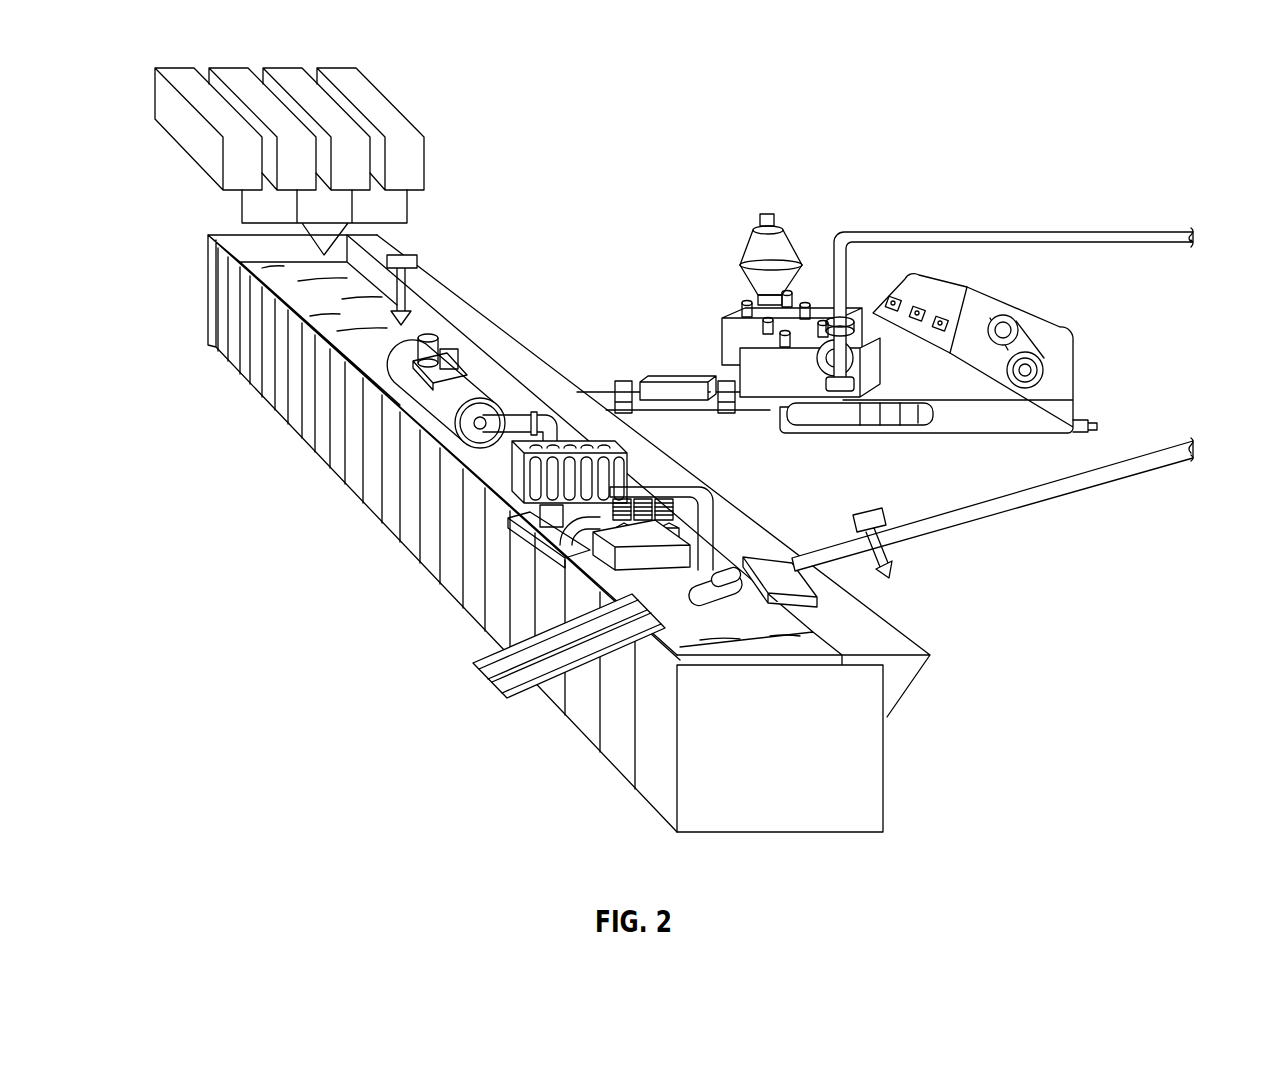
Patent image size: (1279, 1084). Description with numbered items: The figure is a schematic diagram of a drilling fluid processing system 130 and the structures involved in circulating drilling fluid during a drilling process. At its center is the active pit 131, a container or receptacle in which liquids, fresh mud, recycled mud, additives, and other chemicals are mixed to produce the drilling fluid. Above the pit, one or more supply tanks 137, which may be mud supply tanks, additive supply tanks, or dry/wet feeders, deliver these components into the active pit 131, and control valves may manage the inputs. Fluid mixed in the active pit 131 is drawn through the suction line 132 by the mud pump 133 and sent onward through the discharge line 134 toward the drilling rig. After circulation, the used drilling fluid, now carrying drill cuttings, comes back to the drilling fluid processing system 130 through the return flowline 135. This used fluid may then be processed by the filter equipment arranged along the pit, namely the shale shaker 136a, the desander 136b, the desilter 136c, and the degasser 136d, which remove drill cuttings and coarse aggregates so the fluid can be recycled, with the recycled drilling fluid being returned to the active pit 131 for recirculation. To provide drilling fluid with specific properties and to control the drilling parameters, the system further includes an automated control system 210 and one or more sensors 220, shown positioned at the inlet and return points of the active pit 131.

The drilling fluid processing system 130 is at (667, 446).
The active pit 131 is at (293, 298).
The suction line 132 is at (606, 362).
The mud pump 133 is at (873, 434).
The discharge line 134 is at (930, 231).
The return flowline 135 is at (1036, 503).
The shale shaker 136a is at (543, 672).
The desander 136b is at (597, 533).
The desilter 136c is at (512, 482).
The degasser 136d is at (407, 407).
The supply tank 137 is at (407, 112).
The automated control system 210 is at (517, 245).
The sensor 220 is at (426, 262).